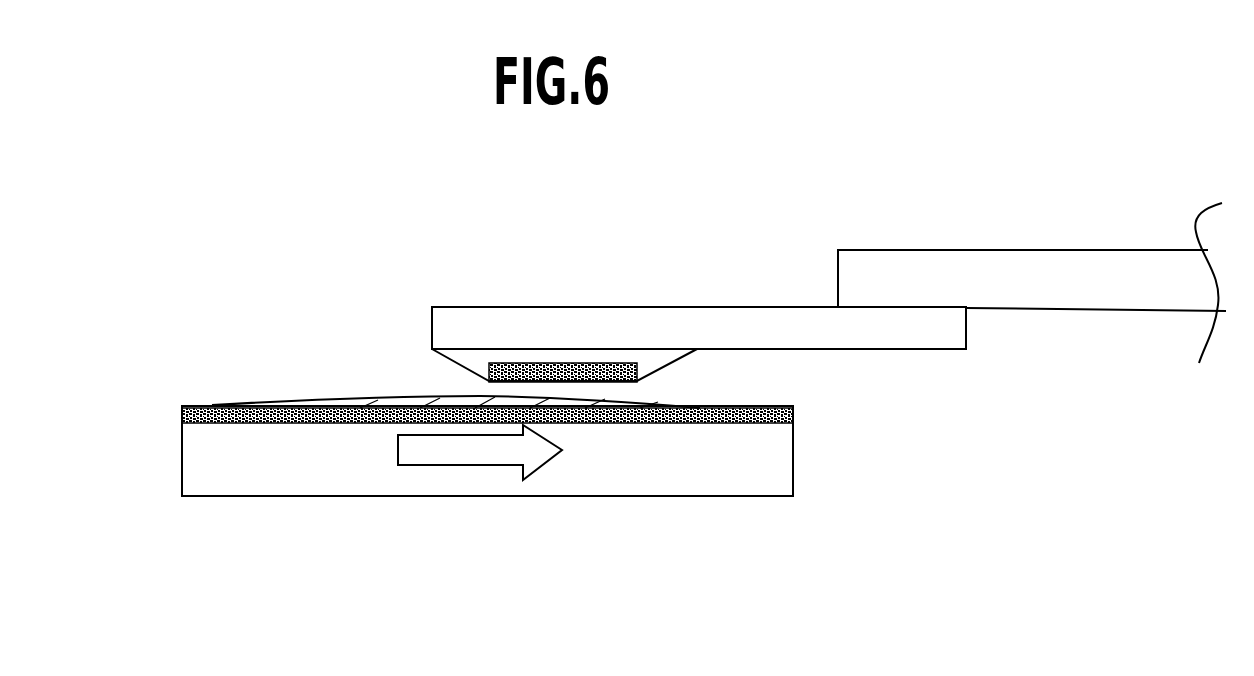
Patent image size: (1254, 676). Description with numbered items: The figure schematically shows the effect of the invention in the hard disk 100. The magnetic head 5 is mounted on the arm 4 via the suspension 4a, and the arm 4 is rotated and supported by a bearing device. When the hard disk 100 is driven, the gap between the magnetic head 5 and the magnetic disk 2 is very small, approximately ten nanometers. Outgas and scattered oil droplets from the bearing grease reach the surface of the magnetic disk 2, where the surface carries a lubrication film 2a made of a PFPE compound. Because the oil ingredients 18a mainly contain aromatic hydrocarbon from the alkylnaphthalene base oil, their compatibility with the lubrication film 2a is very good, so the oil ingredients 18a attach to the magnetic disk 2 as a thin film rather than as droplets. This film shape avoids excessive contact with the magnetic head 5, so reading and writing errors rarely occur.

The hard disk 100 is at (278, 248).
The arm 4 is at (857, 281).
The suspension 4a is at (651, 320).
The magnetic head 5 is at (530, 368).
The magnetic disk 2 is at (752, 477).
The lubrication film 2a is at (790, 420).
The oil ingredients 18a is at (372, 382).